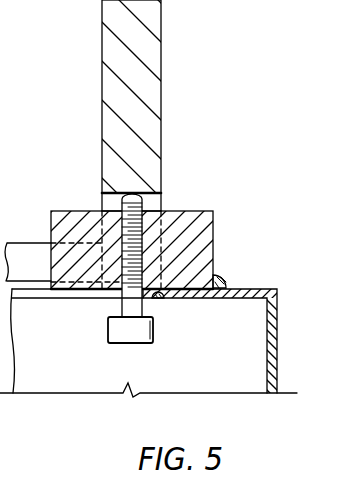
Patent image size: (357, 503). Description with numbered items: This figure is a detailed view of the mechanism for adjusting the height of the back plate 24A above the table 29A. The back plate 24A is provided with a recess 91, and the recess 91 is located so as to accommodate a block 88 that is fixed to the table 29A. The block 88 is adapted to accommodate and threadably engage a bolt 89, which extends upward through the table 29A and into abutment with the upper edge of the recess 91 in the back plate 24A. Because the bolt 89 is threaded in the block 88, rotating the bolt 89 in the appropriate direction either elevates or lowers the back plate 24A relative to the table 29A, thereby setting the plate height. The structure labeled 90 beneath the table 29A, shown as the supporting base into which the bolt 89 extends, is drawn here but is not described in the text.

The back plate 24A is at (161, 57).
The block 88 is at (213, 232).
The recess 91 is at (160, 200).
The bolt 89 is at (147, 302).
The table 29A is at (250, 287).
The base 90 is at (105, 308).